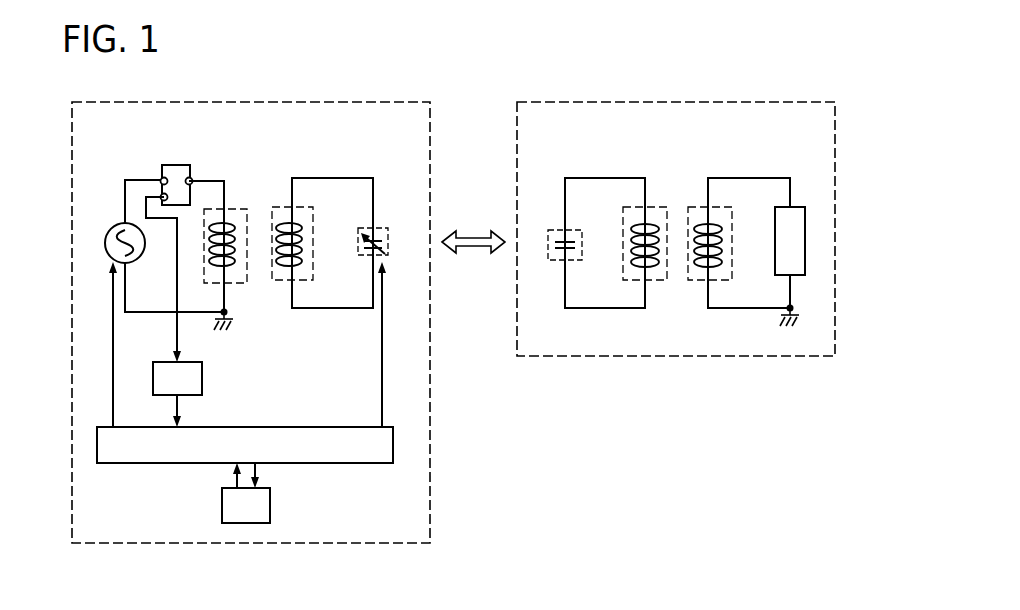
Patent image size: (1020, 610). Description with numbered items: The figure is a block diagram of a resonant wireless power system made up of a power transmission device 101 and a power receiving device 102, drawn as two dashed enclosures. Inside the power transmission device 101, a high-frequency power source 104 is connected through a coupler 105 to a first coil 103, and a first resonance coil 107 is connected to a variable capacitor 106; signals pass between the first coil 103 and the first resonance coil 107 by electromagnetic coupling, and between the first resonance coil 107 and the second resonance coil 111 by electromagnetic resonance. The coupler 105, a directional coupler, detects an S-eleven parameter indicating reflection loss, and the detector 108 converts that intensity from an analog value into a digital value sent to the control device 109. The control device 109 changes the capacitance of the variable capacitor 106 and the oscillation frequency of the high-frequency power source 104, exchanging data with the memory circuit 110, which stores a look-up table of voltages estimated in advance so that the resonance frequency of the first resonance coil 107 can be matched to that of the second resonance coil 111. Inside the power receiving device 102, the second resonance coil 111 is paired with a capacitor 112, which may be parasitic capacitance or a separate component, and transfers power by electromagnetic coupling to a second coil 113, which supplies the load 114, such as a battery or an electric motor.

The power transmission device 101 is at (350, 546).
The power receiving device 102 is at (630, 358).
The first coil 103 is at (210, 212).
The high-frequency power source 104 is at (122, 222).
The coupler 105 is at (176, 165).
The variable capacitor 106 is at (360, 230).
The first resonance coil 107 is at (300, 205).
The detector 108 is at (203, 380).
The control device 109 is at (310, 463).
The memory circuit 110 is at (270, 503).
The second resonance coil 111 is at (652, 207).
The capacitor 112 is at (572, 233).
The second coil 113 is at (713, 207).
The load 114 is at (798, 207).